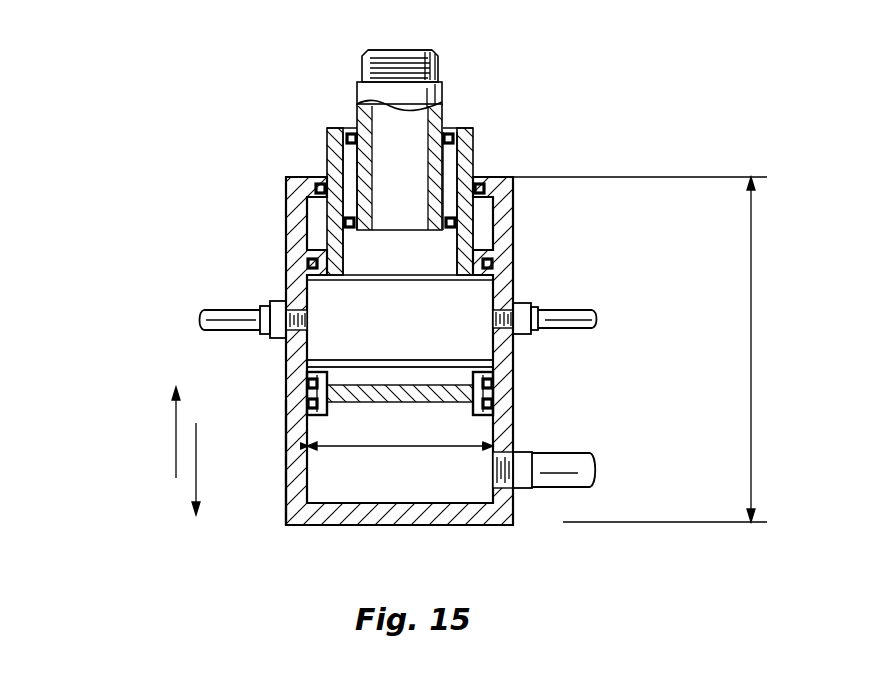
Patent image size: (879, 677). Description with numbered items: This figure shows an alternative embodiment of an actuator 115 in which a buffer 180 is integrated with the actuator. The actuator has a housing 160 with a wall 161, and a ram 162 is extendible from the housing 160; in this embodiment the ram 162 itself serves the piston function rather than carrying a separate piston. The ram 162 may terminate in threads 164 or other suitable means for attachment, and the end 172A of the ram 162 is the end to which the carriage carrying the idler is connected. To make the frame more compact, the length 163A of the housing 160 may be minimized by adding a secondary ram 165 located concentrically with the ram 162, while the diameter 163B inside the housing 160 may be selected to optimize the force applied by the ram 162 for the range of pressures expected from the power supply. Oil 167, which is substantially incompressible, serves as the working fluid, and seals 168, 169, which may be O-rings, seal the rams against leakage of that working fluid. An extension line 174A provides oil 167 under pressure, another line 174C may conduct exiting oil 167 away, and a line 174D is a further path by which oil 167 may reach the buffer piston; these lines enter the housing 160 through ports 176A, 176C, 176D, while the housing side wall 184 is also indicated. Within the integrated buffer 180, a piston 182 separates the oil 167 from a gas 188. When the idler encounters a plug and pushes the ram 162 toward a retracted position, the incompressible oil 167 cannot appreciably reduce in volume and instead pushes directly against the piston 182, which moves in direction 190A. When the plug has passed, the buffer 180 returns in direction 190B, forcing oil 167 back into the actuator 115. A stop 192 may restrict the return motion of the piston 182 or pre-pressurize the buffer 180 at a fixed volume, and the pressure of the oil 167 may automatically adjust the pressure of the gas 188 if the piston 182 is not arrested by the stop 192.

The actuator 115 is at (237, 182).
The housing 160 is at (513, 222).
The wall 161 is at (508, 194).
The ram 162 is at (443, 95).
The length 163A is at (660, 349).
The diameter 163B is at (420, 448).
The threads 164 is at (437, 62).
The secondary ram 165 is at (478, 148).
The oil 167 is at (352, 337).
The seal 168 is at (492, 263).
The seal 169 is at (460, 135).
The end of the ram 172A is at (385, 48).
The extension line 174A is at (210, 313).
The line 174C is at (578, 318).
The line 174D is at (593, 466).
The port 176A is at (288, 285).
The port 176C is at (513, 300).
The port 176D is at (517, 510).
The buffer 180 is at (340, 527).
The piston 182 is at (445, 402).
The housing side wall 184 is at (288, 490).
The gas 188 is at (398, 485).
The direction 190A is at (196, 483).
The direction 190B is at (176, 444).
The stop 192 is at (495, 358).